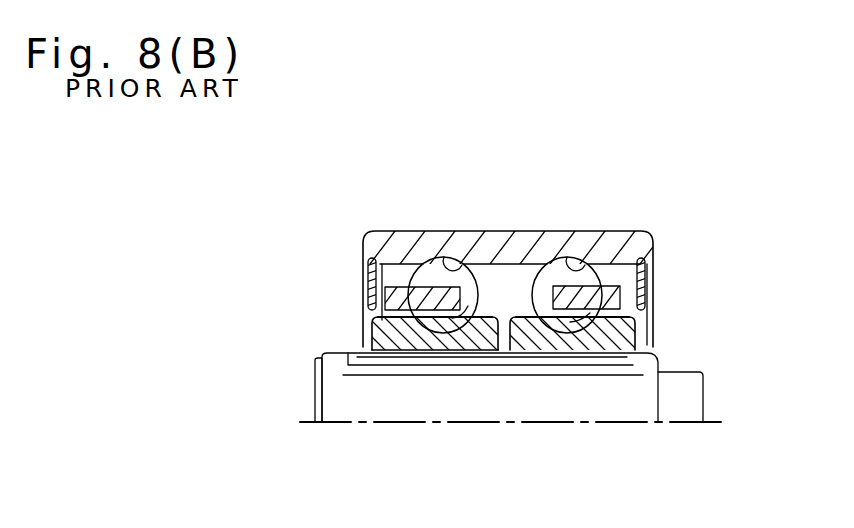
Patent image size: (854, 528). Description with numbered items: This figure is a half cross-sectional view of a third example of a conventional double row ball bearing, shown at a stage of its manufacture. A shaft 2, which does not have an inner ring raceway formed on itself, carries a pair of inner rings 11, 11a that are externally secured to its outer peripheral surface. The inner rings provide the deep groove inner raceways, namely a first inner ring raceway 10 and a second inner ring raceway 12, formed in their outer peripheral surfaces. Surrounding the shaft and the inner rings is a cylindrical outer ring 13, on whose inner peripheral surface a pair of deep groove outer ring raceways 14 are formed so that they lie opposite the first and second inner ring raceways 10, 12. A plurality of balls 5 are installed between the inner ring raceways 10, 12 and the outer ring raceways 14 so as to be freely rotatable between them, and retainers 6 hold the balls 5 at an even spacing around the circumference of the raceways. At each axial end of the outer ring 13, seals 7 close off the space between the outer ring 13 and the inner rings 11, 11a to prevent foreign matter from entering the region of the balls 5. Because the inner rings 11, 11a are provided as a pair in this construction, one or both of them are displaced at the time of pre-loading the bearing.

The shaft 2 is at (346, 353).
The balls 5 is at (511, 402).
The retainers 6 is at (395, 286).
The seals 7 is at (368, 279).
The first inner ring raceway 10 is at (435, 328).
The inner ring 11 is at (572, 327).
The inner ring 11a is at (408, 345).
The second inner ring raceway 12 is at (596, 330).
The outer ring 13 is at (518, 238).
The outer ring raceways 14 is at (458, 262).